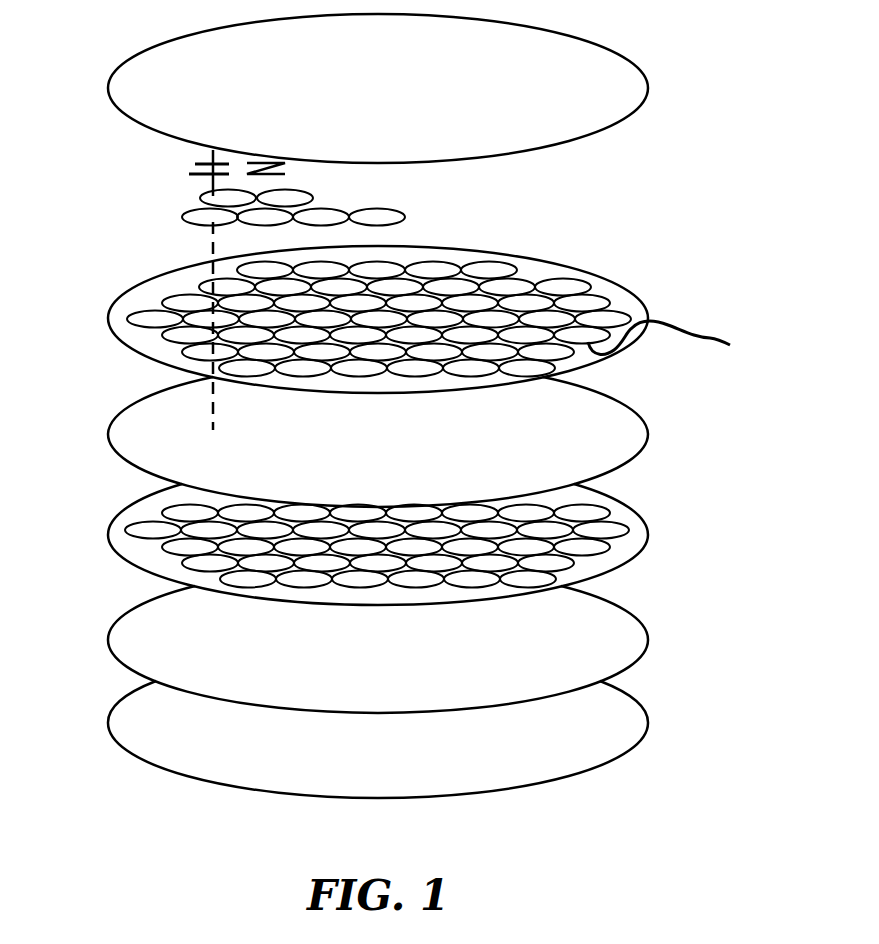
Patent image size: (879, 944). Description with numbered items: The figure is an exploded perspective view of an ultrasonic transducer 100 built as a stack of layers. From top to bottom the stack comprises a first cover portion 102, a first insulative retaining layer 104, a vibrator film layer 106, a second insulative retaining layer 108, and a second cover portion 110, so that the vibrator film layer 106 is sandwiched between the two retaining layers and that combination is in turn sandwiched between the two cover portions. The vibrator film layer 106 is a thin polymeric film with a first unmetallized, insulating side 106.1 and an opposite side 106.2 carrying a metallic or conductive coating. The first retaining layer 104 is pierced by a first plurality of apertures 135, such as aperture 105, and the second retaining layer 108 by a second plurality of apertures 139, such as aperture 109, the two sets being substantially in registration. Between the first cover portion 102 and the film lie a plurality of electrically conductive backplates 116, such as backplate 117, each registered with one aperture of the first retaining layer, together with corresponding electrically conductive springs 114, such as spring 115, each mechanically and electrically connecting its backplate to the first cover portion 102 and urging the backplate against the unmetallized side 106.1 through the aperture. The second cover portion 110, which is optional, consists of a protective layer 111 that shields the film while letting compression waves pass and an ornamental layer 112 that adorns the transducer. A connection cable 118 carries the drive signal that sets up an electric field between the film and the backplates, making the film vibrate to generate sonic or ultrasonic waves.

The ultrasonic transducer 100 is at (731, 127).
The first cover portion 102 is at (165, 62).
The first insulative retaining layer 104 is at (110, 318).
The aperture 105 is at (205, 320).
The vibrator film layer 106 is at (392, 442).
The first unmetallized side 106.1 is at (598, 420).
The opposite side having a metallic or conductive coating 106.2 is at (634, 470).
The second insulative retaining layer 108 is at (112, 534).
The aperture 109 is at (205, 530).
The second cover portion 110 is at (648, 672).
The protective layer 111 is at (122, 617).
The ornamental layer 112 is at (113, 708).
The electrically conductive springs 114 is at (292, 174).
The spring 115 is at (193, 166).
The electrically conductive backplates 116 is at (415, 222).
The backplate 117 is at (190, 211).
The connection cable 118 is at (705, 334).
The first plurality of apertures 135 is at (606, 270).
The second plurality of apertures 139 is at (640, 575).